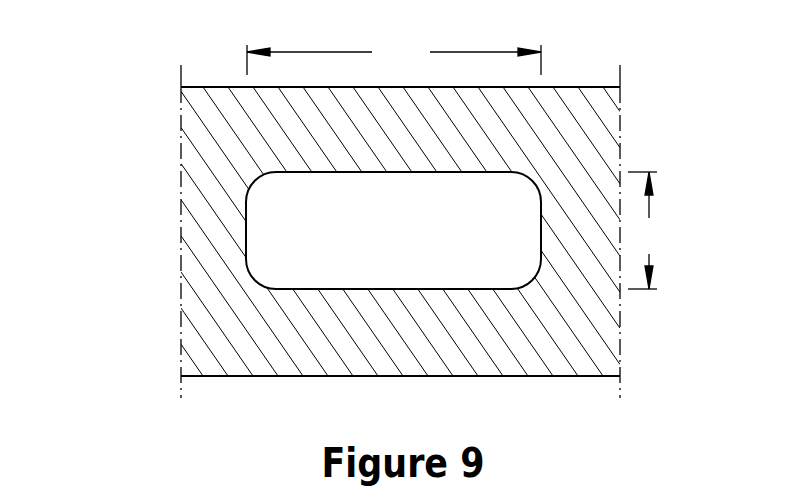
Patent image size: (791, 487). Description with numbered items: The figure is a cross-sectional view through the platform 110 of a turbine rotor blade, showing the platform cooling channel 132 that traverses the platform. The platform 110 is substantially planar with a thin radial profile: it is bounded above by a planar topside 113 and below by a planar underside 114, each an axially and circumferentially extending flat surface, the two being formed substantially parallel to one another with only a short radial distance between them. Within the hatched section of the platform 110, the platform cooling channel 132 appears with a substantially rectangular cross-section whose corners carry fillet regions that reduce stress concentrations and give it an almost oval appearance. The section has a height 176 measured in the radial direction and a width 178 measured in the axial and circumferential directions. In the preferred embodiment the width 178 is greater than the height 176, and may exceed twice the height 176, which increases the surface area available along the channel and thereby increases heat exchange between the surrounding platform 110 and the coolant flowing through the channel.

The platform 110 is at (152, 160).
The topside 113 is at (580, 87).
The underside 114 is at (533, 376).
The platform cooling channel 132 is at (352, 241).
The height 176 is at (650, 230).
The width 178 is at (394, 57).